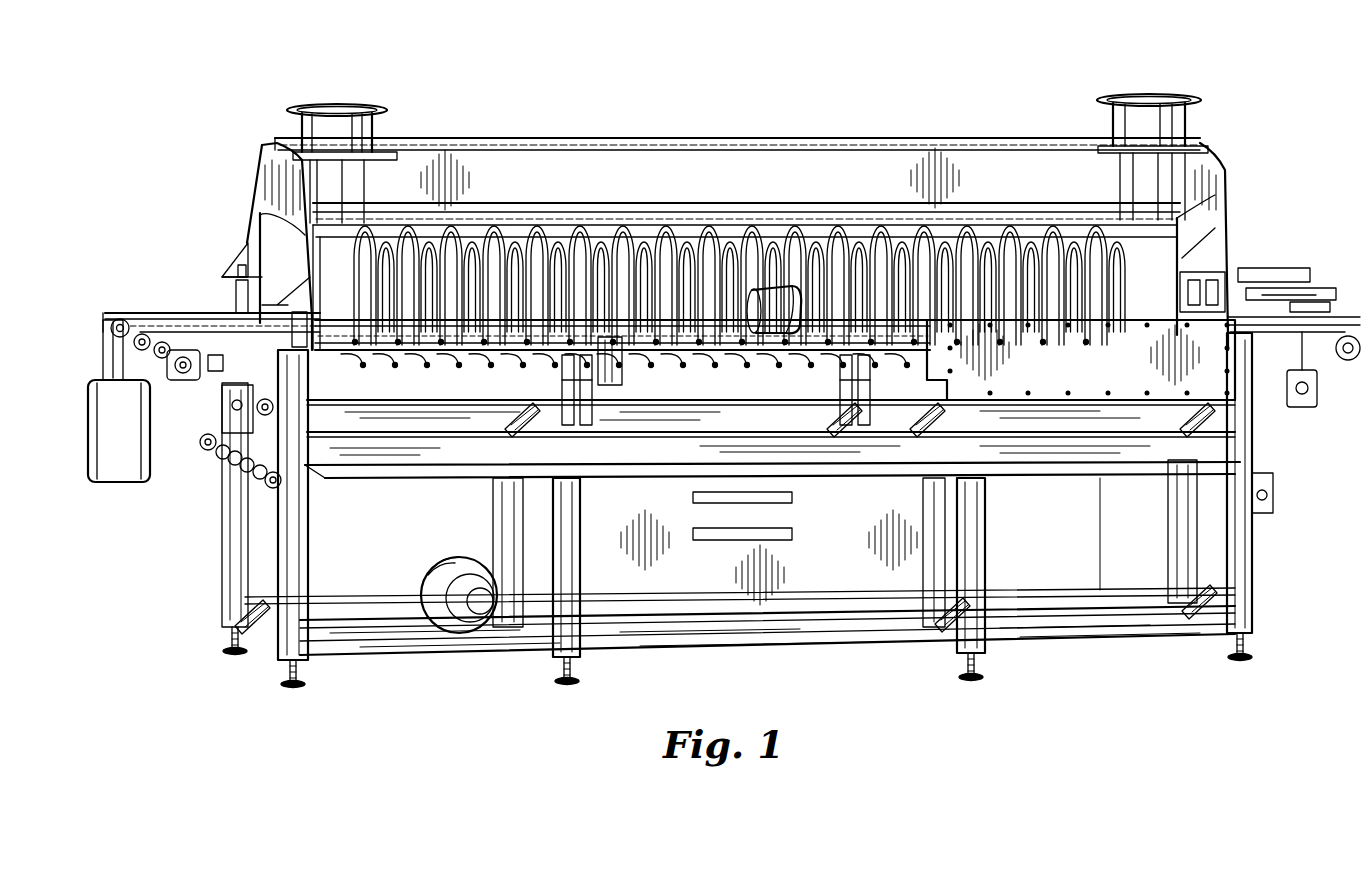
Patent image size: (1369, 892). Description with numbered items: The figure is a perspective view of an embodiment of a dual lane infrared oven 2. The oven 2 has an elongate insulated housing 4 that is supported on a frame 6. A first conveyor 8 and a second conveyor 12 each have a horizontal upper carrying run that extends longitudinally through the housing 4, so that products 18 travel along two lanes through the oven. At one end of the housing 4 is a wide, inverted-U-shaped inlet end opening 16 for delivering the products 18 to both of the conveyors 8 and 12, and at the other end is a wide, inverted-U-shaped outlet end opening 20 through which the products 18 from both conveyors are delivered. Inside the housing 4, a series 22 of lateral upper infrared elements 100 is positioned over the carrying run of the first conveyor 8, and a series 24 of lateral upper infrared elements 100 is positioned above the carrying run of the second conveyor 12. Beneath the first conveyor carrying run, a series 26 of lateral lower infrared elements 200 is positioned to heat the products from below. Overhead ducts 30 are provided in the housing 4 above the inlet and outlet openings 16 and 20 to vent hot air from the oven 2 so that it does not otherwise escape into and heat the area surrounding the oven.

The dual lane infrared oven 2 is at (497, 130).
The insulated housing 4 is at (862, 168).
The frame 6 is at (420, 648).
The first conveyor 8 is at (152, 380).
The second conveyor 12 is at (200, 313).
The inlet end opening 16 is at (278, 235).
The products 18 is at (757, 287).
The outlet end opening 20 is at (1200, 240).
The series of upper infrared elements 22 is at (615, 228).
The series of upper infrared elements 24 is at (487, 224).
The series of lower infrared elements 26 is at (477, 437).
The overhead ducts 30 is at (312, 100).
The upper infrared elements 100 is at (700, 220).
The lower infrared elements 200 is at (480, 372).